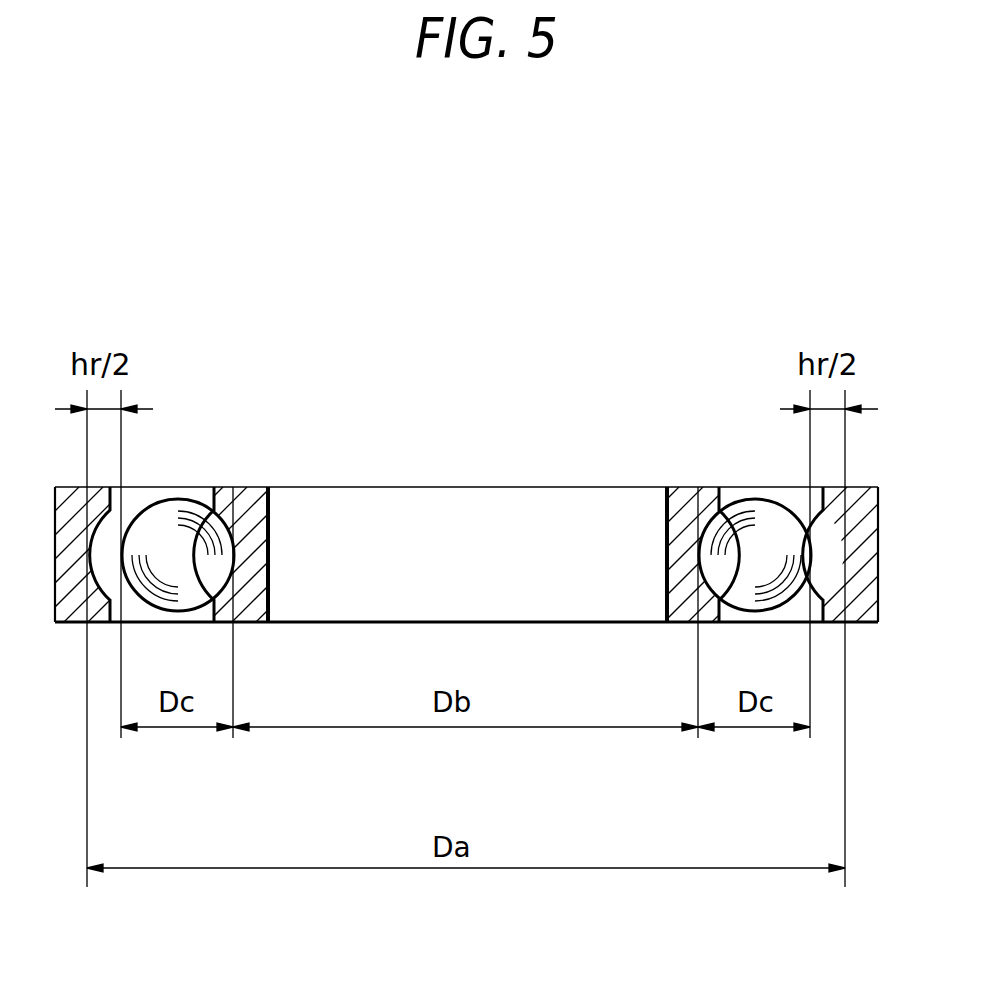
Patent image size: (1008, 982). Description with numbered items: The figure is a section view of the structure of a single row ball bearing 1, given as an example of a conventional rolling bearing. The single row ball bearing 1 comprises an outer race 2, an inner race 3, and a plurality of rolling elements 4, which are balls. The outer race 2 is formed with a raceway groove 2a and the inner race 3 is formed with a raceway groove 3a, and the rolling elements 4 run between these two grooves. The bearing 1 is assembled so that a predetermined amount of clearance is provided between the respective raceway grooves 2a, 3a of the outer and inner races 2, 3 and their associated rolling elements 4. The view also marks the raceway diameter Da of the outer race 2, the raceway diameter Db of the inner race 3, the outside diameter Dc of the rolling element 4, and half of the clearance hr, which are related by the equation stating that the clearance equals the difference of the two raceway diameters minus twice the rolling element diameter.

The single row ball bearing 1 is at (529, 310).
The outer race 2 is at (495, 554).
The raceway groove of the outer race 2a is at (842, 574).
The inner race 3 is at (495, 519).
The raceway groove of the inner race 3a is at (710, 573).
The rolling elements 4 is at (762, 525).